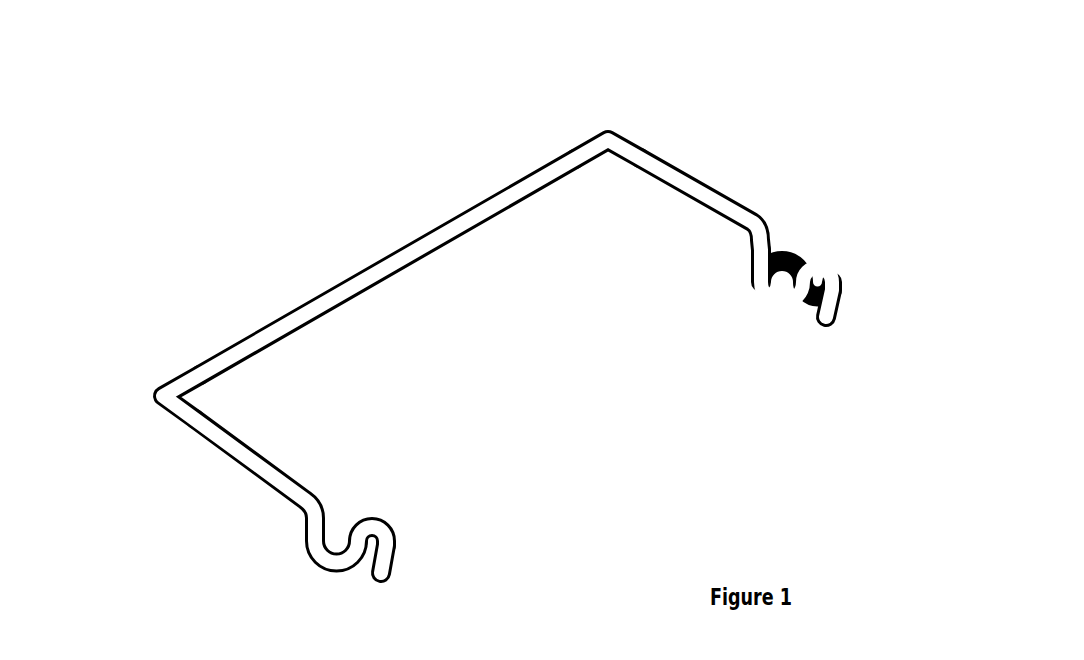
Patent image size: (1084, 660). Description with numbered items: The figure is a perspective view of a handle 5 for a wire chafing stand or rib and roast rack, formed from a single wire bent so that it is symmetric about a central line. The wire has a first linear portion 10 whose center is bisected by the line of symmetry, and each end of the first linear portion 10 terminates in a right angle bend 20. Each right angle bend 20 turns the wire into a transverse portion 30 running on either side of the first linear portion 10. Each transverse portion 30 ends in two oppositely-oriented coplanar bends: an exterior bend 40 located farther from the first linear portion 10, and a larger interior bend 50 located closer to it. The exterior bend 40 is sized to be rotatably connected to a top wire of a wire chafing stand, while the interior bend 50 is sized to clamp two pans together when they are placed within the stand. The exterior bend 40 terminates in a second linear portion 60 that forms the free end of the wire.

The handle 5 is at (474, 309).
The first linear portion 10 is at (399, 254).
The right angle bend 20 is at (160, 398).
The transverse portion 30 is at (697, 178).
The exterior bend 40 is at (825, 270).
The interior bend 50 is at (770, 297).
The second linear portion 60 is at (830, 312).